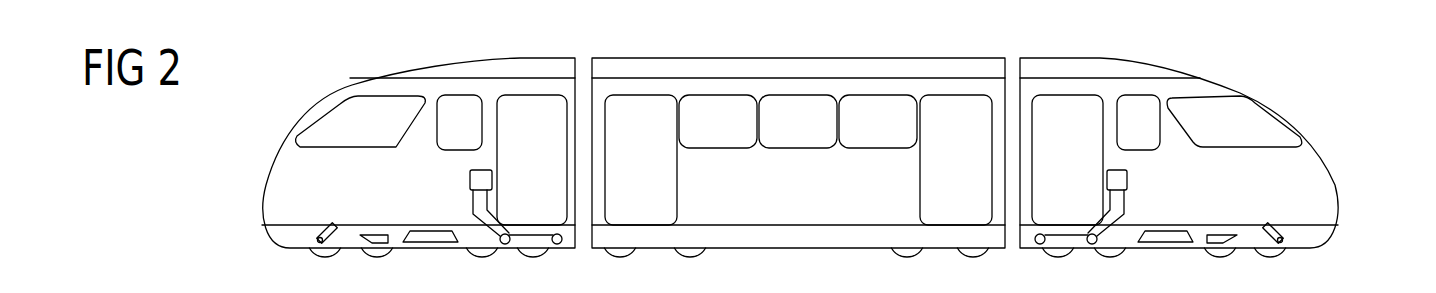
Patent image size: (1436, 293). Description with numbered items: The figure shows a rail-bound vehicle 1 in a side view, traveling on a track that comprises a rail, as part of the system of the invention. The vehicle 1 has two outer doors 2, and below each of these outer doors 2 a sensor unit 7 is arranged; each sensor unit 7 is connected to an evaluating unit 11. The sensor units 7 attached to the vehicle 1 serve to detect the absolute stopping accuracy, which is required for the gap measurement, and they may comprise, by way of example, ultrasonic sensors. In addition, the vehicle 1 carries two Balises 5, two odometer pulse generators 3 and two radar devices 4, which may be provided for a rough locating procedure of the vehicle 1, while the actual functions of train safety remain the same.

The rail-bound vehicle 1 is at (1318, 72).
The outer doors 2 is at (521, 179).
The odometer pulse generators 3 is at (333, 222).
The radar devices 4 is at (383, 235).
The Balises 5 is at (416, 231).
The sensor unit 7 is at (507, 245).
The evaluating unit 11 is at (480, 172).